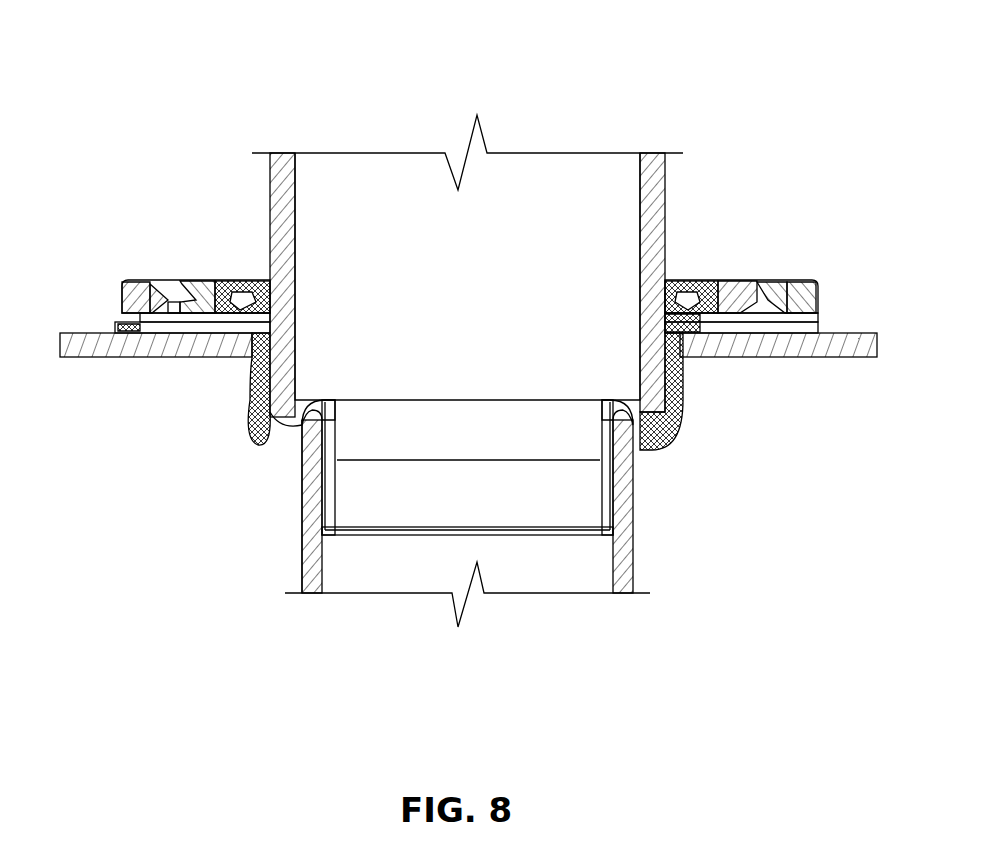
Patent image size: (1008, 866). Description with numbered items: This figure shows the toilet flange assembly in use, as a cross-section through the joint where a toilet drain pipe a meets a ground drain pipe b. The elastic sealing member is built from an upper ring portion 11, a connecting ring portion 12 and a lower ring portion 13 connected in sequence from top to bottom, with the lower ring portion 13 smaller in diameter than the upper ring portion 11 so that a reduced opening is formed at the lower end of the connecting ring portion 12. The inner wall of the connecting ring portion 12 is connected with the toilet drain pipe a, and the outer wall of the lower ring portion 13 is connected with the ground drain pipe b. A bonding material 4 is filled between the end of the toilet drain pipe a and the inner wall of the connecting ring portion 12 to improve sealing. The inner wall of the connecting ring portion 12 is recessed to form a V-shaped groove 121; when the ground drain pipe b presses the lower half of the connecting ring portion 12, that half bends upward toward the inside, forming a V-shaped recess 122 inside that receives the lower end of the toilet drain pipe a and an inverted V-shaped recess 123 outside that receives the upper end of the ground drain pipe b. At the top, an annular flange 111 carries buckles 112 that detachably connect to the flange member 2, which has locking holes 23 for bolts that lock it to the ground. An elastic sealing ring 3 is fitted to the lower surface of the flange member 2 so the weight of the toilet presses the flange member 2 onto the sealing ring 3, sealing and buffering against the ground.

The toilet drain pipe a is at (290, 153).
The ground drain pipe b is at (620, 598).
The upper ring portion 11 is at (232, 338).
The sealing ring 3 is at (118, 310).
The buckles 112 is at (212, 282).
The annular flange 111 is at (248, 278).
The flange member 2 is at (810, 300).
The locking holes 23 is at (772, 300).
The bonding material 4 is at (258, 416).
The lower ring portion 13 is at (635, 492).
The connecting ring portion 12 is at (267, 443).
The V-shaped groove 121 is at (280, 440).
The V-shaped recess 122 is at (275, 427).
The inverted V-shaped recess 123 is at (305, 415).